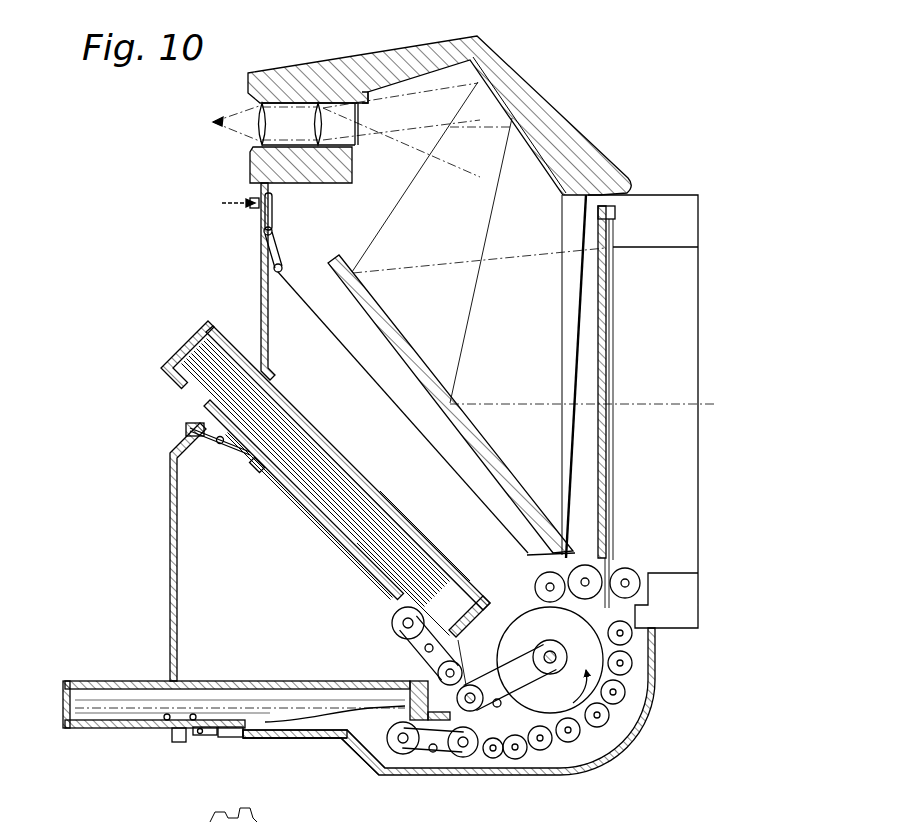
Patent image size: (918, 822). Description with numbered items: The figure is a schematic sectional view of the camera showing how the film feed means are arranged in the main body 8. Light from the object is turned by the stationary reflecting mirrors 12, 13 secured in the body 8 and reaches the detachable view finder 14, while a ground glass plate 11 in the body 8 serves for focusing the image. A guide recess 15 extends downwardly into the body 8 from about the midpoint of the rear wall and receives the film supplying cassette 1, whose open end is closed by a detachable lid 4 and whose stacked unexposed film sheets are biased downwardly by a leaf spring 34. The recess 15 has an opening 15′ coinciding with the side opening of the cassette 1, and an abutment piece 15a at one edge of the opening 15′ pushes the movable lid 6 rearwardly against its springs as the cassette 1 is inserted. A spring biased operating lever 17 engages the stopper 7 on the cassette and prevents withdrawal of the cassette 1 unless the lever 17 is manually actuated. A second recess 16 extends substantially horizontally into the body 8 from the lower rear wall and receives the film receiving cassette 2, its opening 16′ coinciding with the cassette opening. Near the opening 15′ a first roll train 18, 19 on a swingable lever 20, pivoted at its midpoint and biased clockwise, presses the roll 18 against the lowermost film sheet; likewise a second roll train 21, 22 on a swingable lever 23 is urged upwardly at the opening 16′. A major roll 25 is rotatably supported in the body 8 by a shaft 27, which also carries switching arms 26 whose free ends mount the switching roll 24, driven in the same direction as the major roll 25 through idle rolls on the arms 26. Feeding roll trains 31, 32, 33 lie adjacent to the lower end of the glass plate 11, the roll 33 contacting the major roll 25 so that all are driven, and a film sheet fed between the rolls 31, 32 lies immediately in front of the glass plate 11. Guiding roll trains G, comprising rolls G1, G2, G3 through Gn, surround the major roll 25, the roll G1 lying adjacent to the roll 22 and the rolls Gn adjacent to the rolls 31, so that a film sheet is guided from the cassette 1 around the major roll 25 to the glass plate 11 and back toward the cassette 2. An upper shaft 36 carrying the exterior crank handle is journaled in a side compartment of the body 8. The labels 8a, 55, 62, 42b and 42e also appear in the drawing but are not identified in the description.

The film supplying cassette 1 is at (217, 357).
The film receiving cassette 2 is at (102, 727).
The lid 4 is at (193, 337).
The movable lid 6 is at (314, 521).
The stopper 7 is at (270, 478).
The main body 8 is at (170, 515).
The cable 8a is at (304, 298).
The ground glass plate 11 is at (600, 327).
The stationary reflecting mirror 12 is at (425, 375).
The stationary reflecting mirror 13 is at (530, 152).
The detachable view finder 14 is at (316, 104).
The guide recess 15 is at (302, 418).
The opening 15′ is at (427, 610).
The abutment piece 15a is at (387, 607).
The recess 16 is at (268, 741).
The opening 16′ is at (382, 722).
The spring biased operating lever 17 is at (237, 448).
The roll 18 is at (392, 622).
The roll 19 is at (437, 679).
The swingable lever 20 is at (413, 647).
The roll 21 is at (367, 757).
The roll 22 is at (457, 754).
The swingable lever 23 is at (417, 752).
The switching roll 24 is at (492, 758).
The major roll 25 is at (535, 615).
The switching arm 26 is at (470, 684).
The shaft 27 is at (548, 647).
The roll 31 is at (636, 575).
The roll 32 is at (596, 568).
The roll 33 is at (540, 578).
The leaf spring 34 is at (420, 530).
The upper shaft 36 is at (315, 716).
The gear 42b is at (147, 818).
The gear 42e is at (316, 821).
The cover notch 55 is at (370, 98).
The lever 62 is at (263, 215).
The guiding roll trains G is at (608, 727).
The guiding roll G1 is at (512, 758).
The guiding roll G2 is at (535, 752).
The guiding roll G3 is at (558, 748).
The guiding roll Gn is at (632, 642).